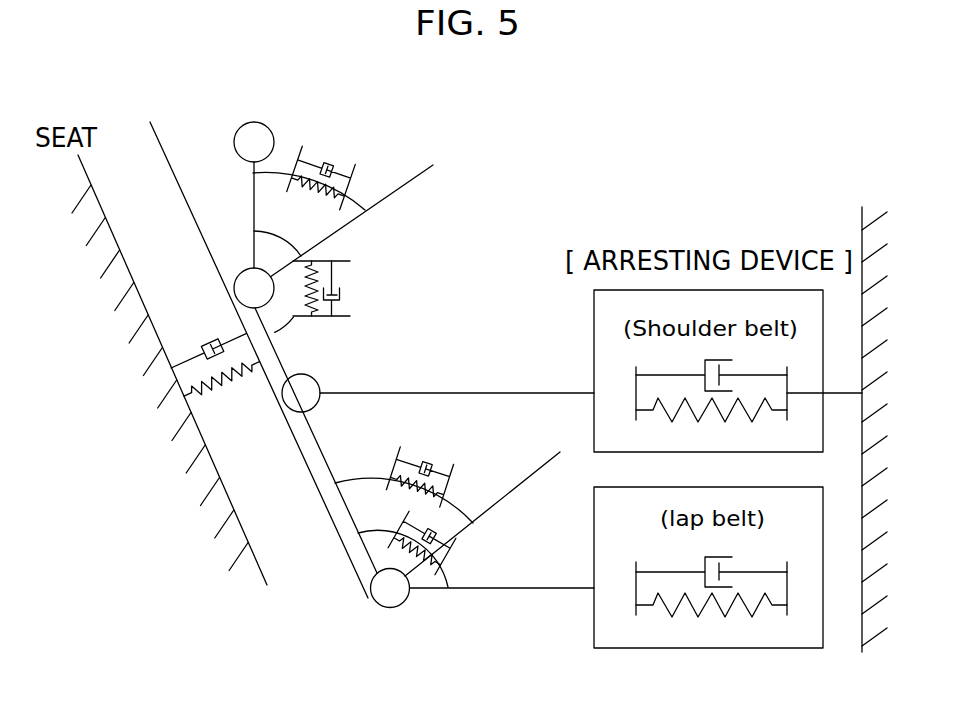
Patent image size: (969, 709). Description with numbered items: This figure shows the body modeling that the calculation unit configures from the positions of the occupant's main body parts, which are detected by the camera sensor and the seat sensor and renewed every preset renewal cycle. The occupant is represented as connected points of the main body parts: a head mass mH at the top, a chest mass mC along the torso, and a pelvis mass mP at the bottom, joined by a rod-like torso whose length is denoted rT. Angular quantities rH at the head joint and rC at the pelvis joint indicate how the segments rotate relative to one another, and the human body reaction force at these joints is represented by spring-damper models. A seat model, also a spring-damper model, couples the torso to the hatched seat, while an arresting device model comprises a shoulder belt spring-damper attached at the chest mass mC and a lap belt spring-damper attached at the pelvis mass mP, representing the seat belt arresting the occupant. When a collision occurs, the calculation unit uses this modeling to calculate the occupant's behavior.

The head mass mH is at (253, 122).
The chest mass mC is at (315, 377).
The pelvis mass mP is at (387, 608).
The head rotation angle rH is at (257, 224).
The torso length rT is at (259, 421).
The pelvis rotation angle rC is at (386, 532).